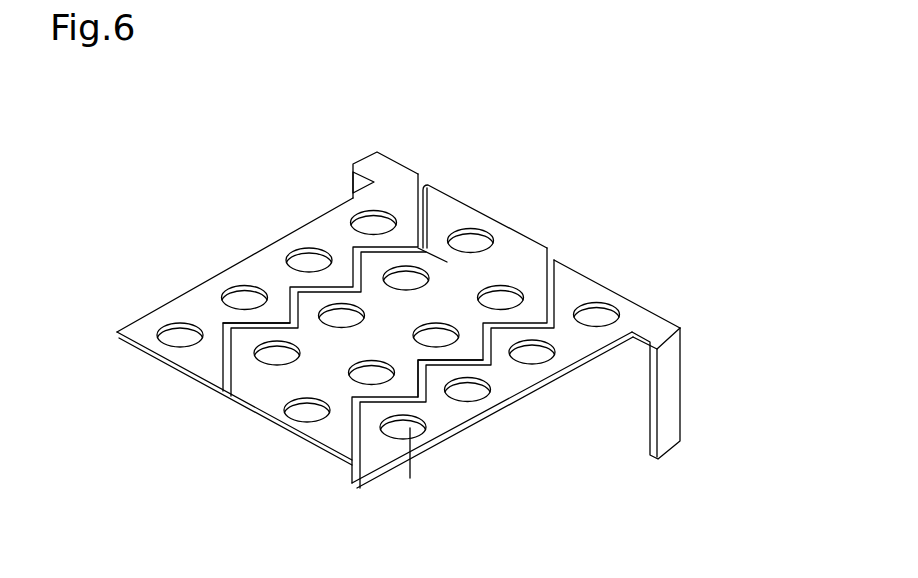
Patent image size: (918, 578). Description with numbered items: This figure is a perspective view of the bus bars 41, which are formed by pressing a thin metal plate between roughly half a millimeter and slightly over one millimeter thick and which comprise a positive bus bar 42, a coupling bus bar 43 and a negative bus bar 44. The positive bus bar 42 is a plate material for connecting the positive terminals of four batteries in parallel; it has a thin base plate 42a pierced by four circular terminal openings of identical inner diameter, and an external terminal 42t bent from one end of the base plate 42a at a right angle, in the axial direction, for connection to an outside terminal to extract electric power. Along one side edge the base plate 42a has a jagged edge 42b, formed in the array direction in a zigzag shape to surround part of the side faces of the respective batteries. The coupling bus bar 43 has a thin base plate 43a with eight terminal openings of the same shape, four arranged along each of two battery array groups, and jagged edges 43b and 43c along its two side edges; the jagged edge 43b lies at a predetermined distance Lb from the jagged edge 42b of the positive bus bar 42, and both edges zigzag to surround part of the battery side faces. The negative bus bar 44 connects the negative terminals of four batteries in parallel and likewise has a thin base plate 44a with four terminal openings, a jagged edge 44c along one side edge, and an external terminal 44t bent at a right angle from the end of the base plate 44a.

The bus bars 41 is at (695, 224).
The positive bus bar 42 is at (405, 167).
The base plate 42a is at (328, 214).
The jagged edge 42b is at (303, 243).
The external terminal 42t is at (351, 178).
The coupling bus bar 43 is at (497, 219).
The base plate 43a is at (305, 303).
The jagged edge 43b is at (253, 322).
The jagged edge 43c is at (411, 478).
The negative bus bar 44 is at (602, 282).
The base plate 44a is at (507, 413).
The jagged edge 44c is at (418, 393).
The external terminal 44t is at (682, 388).
The predetermined distance Lb is at (418, 243).